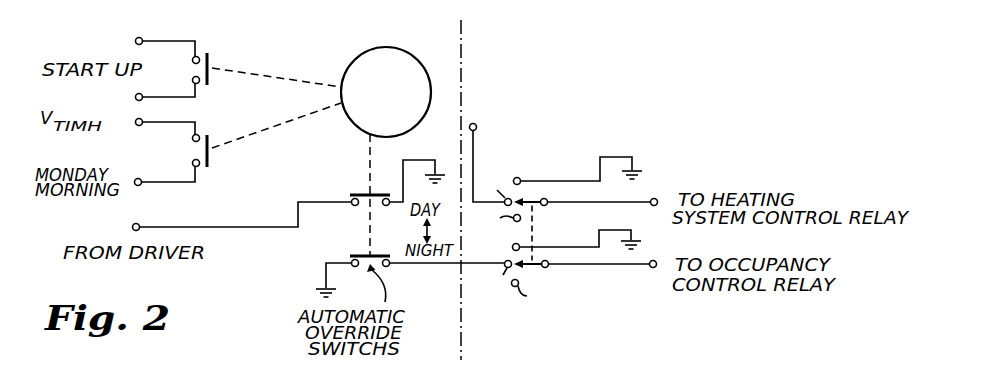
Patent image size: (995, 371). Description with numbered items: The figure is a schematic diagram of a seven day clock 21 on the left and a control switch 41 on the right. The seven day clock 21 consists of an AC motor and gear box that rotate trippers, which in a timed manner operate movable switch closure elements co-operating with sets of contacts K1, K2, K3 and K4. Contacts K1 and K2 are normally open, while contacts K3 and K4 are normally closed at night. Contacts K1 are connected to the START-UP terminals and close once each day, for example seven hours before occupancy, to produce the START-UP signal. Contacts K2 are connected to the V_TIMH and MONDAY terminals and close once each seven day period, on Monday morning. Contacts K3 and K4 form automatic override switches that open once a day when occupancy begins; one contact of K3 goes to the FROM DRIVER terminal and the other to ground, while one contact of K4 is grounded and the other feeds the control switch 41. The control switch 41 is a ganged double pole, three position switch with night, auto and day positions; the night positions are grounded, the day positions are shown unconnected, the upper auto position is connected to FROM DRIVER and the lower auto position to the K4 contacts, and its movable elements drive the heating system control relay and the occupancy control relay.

The seven day clock 21 is at (370, 42).
The control switch 41 is at (523, 147).
The contacts K1 is at (192, 69).
The contacts K2 is at (193, 152).
The contacts K3 is at (395, 183).
The contacts K4 is at (410, 265).